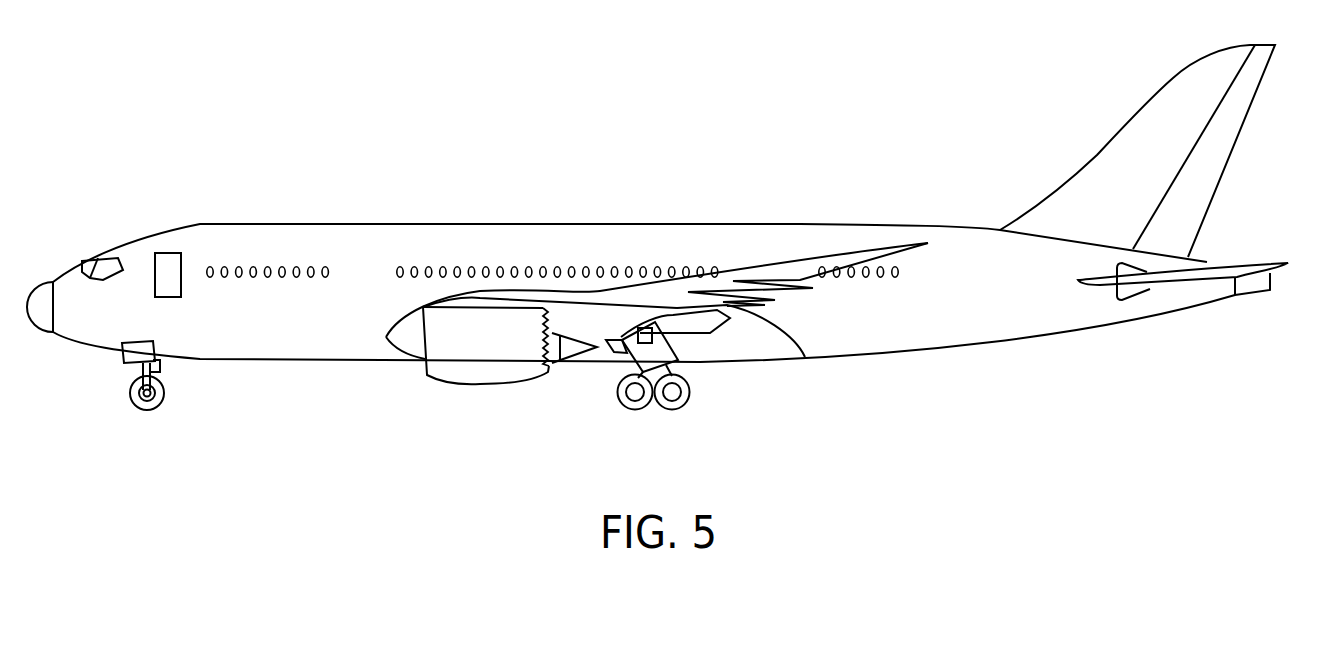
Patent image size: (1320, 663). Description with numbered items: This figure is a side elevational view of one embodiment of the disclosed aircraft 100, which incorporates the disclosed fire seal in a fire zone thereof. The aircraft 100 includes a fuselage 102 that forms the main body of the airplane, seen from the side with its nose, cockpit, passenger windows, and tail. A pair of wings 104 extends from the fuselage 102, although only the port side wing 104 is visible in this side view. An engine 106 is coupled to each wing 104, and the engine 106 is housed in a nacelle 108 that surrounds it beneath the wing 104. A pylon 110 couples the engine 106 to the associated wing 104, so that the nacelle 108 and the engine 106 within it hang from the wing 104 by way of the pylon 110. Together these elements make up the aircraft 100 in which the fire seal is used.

The aircraft 100 is at (277, 122).
The fuselage 102 is at (648, 232).
The wing 104 is at (717, 280).
The engine 106 is at (517, 350).
The nacelle 108 is at (483, 378).
The pylon 110 is at (593, 317).